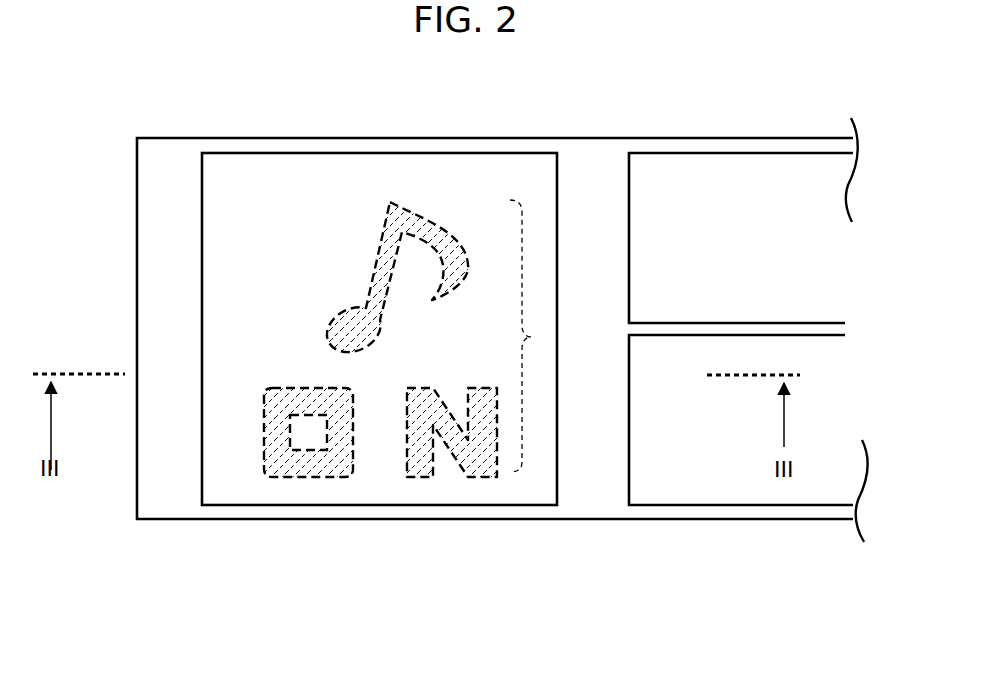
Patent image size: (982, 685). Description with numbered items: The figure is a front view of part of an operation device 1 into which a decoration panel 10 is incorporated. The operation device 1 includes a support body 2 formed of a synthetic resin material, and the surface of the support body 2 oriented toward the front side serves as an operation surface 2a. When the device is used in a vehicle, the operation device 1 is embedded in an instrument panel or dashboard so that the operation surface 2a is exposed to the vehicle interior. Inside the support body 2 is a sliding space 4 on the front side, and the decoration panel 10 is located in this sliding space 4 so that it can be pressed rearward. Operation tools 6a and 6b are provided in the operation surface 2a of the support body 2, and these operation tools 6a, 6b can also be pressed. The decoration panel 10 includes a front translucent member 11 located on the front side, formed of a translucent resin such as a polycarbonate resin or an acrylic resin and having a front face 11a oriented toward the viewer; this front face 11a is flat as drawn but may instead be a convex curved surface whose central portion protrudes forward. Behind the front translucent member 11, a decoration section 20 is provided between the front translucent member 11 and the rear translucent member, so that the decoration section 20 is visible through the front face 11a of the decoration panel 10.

The operation device 1 is at (763, 97).
The support body 2 is at (641, 138).
The operation surface 2a is at (588, 475).
The sliding space 4 is at (556, 478).
The operation tool 6a is at (780, 295).
The operation tool 6b is at (800, 403).
The decoration panel 10 is at (315, 277).
The front translucent member 11 is at (202, 248).
The front face 11a is at (362, 175).
The decoration section 20 is at (531, 337).